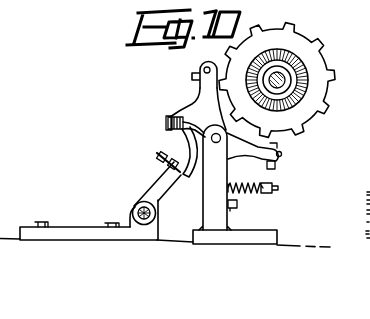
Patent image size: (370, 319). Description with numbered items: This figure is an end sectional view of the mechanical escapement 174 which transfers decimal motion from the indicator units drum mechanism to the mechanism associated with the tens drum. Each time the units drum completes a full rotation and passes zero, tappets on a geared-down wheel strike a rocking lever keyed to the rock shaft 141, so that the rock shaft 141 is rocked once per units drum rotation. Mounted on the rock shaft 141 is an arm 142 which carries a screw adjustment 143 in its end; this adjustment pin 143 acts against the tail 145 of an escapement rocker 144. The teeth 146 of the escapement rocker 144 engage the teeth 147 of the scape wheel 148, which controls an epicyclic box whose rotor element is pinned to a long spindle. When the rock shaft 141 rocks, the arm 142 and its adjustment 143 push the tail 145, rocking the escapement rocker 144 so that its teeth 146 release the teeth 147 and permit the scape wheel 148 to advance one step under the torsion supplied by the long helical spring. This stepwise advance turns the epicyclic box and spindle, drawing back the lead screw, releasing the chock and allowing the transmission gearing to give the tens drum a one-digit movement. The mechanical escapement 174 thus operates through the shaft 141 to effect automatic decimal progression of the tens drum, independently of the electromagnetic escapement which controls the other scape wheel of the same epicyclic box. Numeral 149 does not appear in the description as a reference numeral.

The rock shaft 141 is at (133, 210).
The arm 142 is at (148, 186).
The screw adjustment 143 is at (160, 156).
The escapement rocker 144 is at (195, 108).
The tail 145 is at (188, 146).
The teeth of escapement rocker 146 is at (282, 144).
The teeth of scape wheel 147 is at (322, 118).
The scape wheel 148 is at (320, 64).
The shaft 149 is at (306, 90).
The mechanical escapement 174 is at (301, 174).